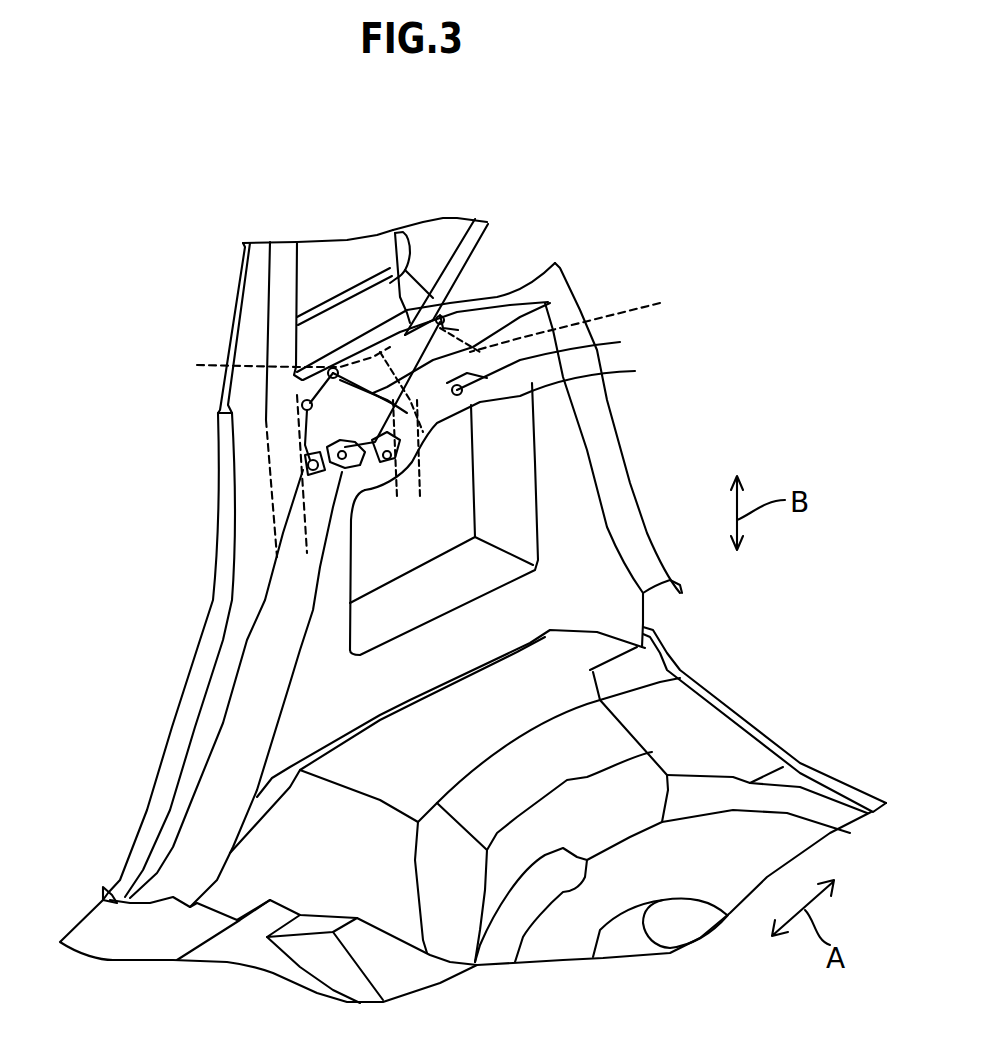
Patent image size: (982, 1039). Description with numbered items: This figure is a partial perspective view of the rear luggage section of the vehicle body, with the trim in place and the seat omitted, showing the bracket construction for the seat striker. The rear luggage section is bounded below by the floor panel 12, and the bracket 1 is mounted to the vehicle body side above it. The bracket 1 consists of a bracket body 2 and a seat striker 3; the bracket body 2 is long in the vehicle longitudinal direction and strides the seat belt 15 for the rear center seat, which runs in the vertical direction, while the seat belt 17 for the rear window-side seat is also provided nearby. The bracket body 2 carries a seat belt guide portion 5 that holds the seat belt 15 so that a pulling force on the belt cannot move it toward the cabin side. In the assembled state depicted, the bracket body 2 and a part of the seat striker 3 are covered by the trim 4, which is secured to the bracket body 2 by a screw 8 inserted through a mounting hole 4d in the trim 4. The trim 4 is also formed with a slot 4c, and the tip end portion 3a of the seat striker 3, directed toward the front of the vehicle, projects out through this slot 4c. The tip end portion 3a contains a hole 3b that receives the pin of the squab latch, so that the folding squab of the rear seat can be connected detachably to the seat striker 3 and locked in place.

The bracket 1 is at (578, 319).
The bracket body 2 is at (281, 363).
The seat striker 3 is at (310, 527).
The tip end portion 3a is at (305, 460).
The hole 3b is at (307, 481).
The trim 4 is at (603, 437).
The slot 4c is at (372, 482).
The mounting hole 4d is at (558, 355).
The seat belt guide portion 5 is at (395, 233).
The screw 8 is at (511, 423).
The floor panel 12 is at (702, 722).
The seat belt 15 is at (467, 243).
The seat belt 17 is at (262, 303).